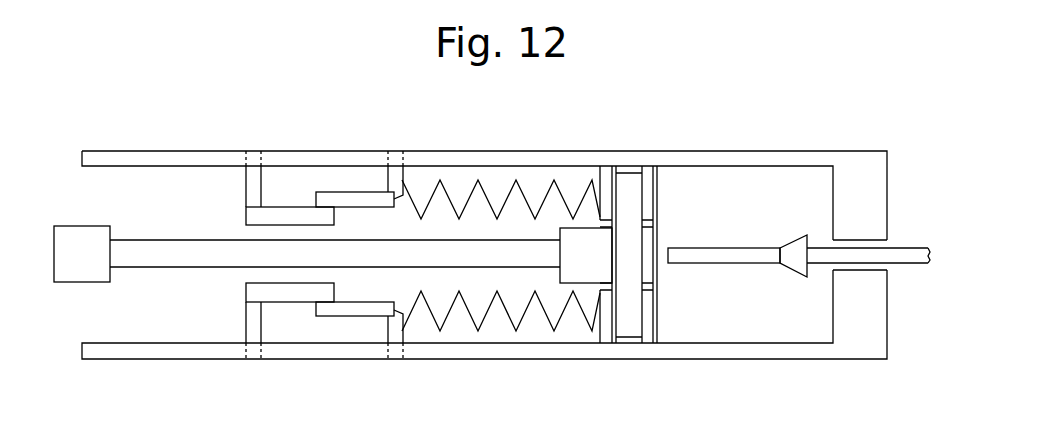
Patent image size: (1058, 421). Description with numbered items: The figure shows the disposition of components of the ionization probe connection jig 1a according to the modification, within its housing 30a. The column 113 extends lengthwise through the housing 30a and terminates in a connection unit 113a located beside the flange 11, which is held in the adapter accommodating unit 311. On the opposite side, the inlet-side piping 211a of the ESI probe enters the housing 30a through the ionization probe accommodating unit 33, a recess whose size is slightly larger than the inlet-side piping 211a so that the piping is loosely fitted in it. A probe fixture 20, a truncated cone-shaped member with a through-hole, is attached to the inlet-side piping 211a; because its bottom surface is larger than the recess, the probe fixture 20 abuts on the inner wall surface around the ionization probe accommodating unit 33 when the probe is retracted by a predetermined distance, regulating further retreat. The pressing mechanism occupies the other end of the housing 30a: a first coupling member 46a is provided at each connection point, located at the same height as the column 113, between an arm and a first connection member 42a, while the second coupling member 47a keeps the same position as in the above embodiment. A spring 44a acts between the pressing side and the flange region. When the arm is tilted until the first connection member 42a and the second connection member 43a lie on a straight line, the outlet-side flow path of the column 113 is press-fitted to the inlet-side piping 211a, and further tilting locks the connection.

The ionization probe connection jig 1a is at (768, 122).
The housing 30a is at (357, 152).
The column 113 is at (163, 240).
The connection unit 113a is at (617, 242).
The adapter accommodating unit 311 is at (607, 178).
The flange 11 is at (628, 203).
The spring 44a is at (482, 180).
The first coupling member 46a is at (243, 187).
The second coupling member 47a is at (402, 163).
The first connection member 42a is at (335, 210).
The second connection member 43a is at (315, 193).
The inlet-side piping 211a is at (710, 265).
The probe fixture 20 is at (788, 268).
The ionization probe accommodating unit 33 is at (882, 247).